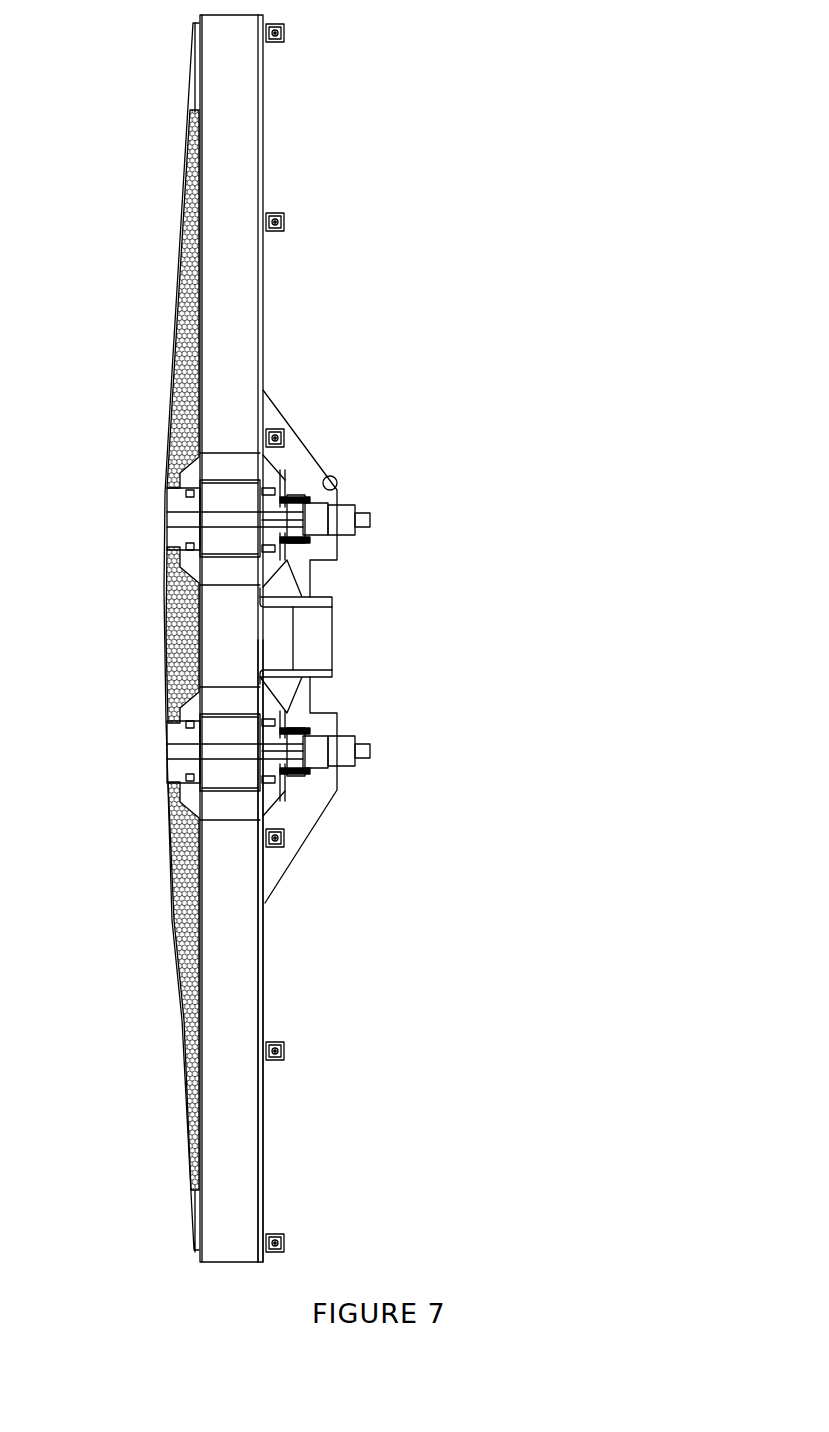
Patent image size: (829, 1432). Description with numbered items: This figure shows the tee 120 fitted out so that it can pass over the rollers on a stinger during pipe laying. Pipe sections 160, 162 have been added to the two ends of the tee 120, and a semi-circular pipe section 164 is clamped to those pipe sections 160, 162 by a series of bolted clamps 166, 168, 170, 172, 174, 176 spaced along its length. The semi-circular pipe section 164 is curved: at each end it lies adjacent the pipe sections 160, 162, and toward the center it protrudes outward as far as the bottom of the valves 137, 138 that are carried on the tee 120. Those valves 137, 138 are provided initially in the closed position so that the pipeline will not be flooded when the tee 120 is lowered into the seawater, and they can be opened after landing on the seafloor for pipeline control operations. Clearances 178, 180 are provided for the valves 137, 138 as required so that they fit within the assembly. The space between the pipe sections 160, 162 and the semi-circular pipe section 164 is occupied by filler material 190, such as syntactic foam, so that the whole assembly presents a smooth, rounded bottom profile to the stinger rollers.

The tee 120 is at (393, 598).
The valve 137 is at (167, 733).
The valve 138 is at (167, 505).
The pipe section 160 is at (266, 133).
The pipe section 162 is at (266, 1150).
The semi-circular pipe section 164 is at (172, 372).
The bolted clamp 166 is at (284, 32).
The bolted clamp 168 is at (284, 217).
The bolted clamp 170 is at (287, 438).
The bolted clamp 172 is at (290, 837).
The bolted clamp 174 is at (284, 1049).
The bolted clamp 176 is at (284, 1243).
The clearance 178 is at (158, 772).
The clearance 180 is at (162, 540).
The filler material 190 is at (185, 885).